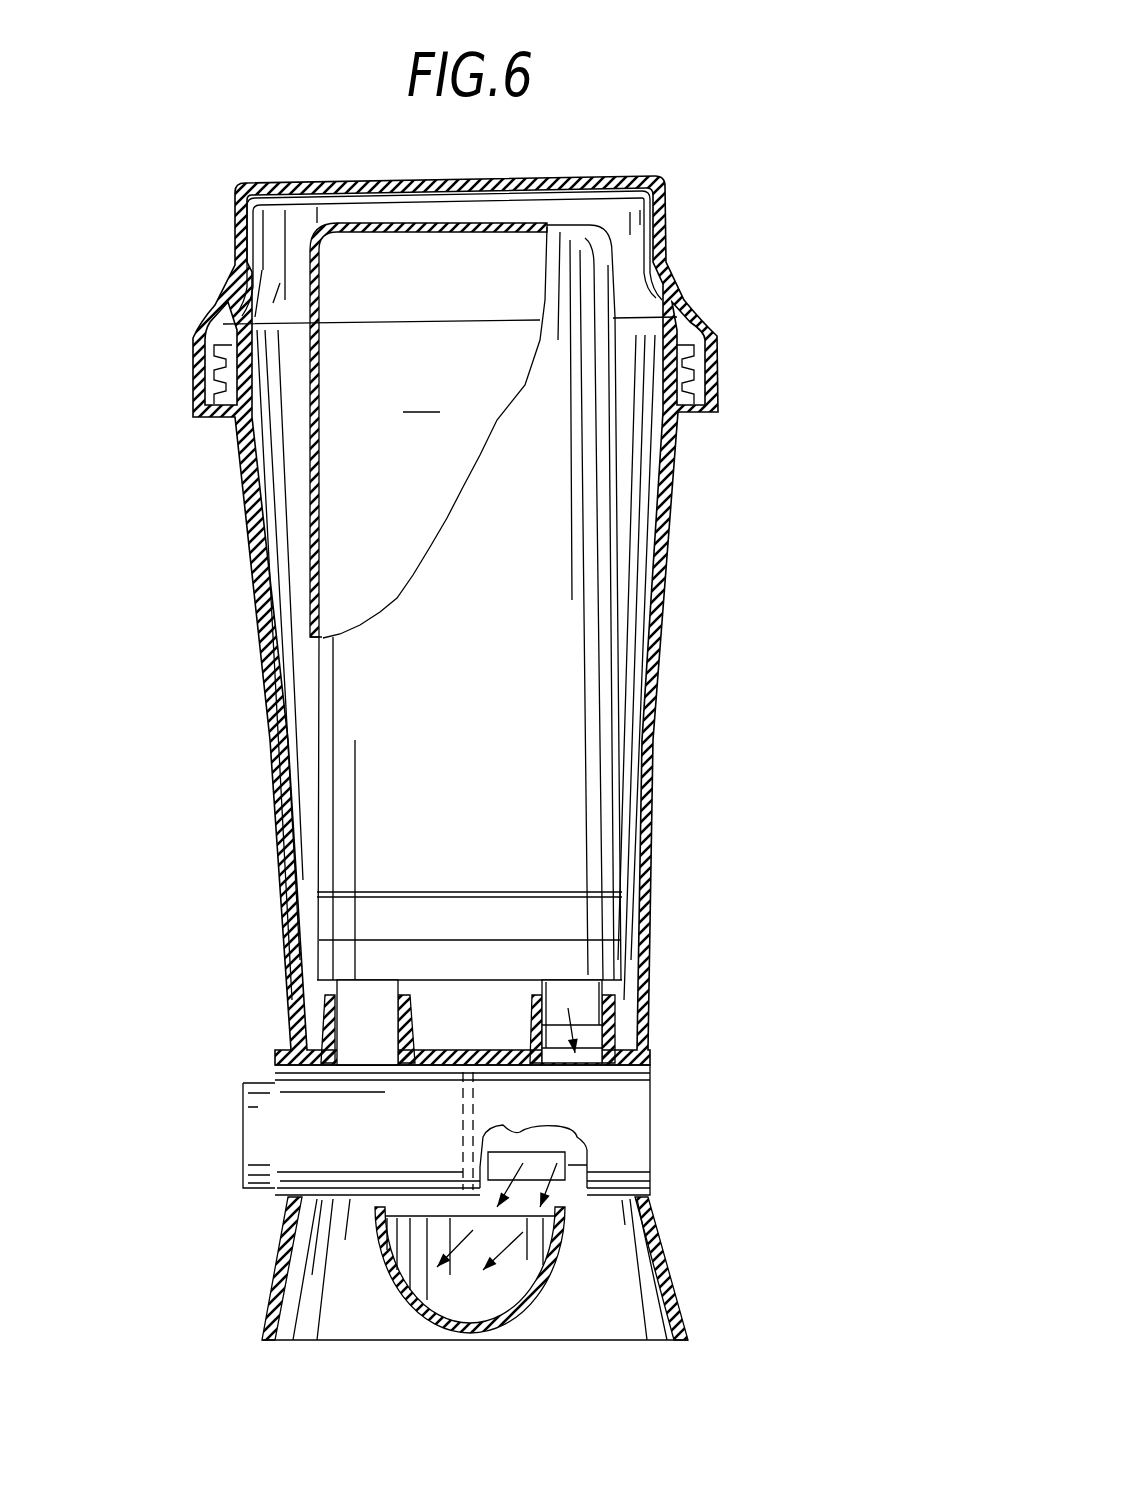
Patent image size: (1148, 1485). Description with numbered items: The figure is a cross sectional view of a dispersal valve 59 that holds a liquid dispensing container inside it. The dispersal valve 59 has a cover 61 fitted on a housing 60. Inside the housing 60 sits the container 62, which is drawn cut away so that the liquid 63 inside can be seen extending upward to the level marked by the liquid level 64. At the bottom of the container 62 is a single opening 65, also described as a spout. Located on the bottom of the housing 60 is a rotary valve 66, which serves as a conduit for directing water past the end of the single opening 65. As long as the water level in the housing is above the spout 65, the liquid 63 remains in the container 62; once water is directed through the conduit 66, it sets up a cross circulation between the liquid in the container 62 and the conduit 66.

The dispersal valve 59 is at (710, 177).
The housing 60 is at (668, 598).
The cover 61 is at (667, 260).
The container 62 is at (575, 830).
The liquid 63 is at (466, 644).
The liquid level 64 is at (410, 326).
The single opening 65 is at (585, 995).
The rotary valve 66 is at (627, 1130).